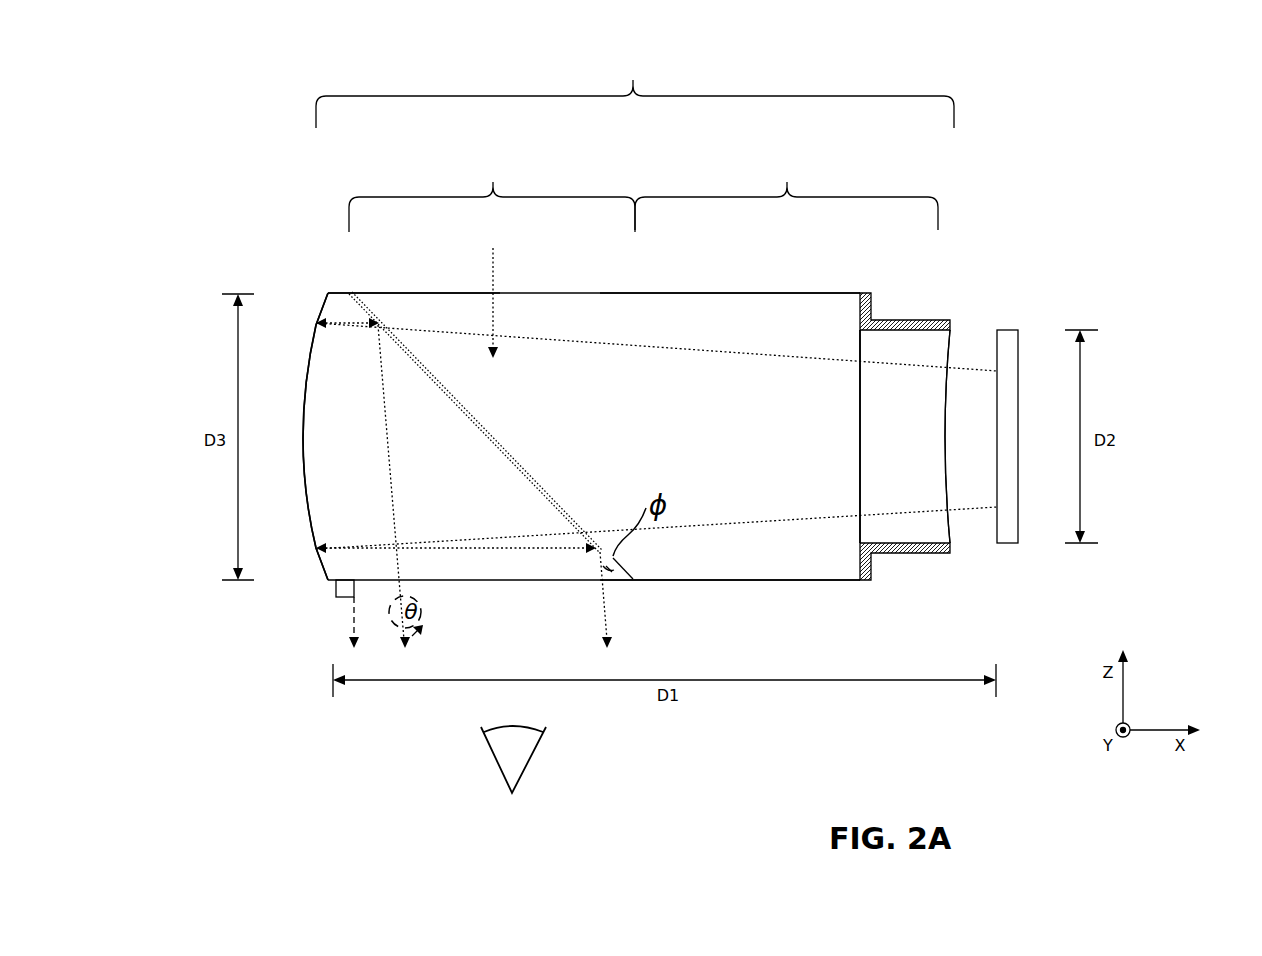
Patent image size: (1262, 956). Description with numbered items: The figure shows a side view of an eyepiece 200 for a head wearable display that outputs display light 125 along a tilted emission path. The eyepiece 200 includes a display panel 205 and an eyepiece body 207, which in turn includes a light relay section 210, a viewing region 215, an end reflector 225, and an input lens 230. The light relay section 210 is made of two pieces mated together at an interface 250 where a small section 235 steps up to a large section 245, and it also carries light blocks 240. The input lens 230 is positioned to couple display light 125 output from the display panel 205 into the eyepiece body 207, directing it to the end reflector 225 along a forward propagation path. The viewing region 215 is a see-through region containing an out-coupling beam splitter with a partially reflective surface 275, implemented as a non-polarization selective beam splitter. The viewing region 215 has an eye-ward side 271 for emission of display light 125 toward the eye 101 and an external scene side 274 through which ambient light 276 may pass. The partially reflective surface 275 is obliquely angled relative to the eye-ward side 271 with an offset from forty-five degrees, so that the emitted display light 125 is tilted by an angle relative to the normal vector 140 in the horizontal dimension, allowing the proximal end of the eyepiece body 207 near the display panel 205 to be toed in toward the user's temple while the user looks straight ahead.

The eyepiece 200 is at (1199, 110).
The eyepiece body 207 is at (635, 89).
The external scene side 274 is at (389, 273).
The viewing region 215 is at (492, 192).
The light relay section 210 is at (786, 191).
The large section 245 is at (748, 322).
The end reflector 225 is at (320, 570).
The light blocks 240 is at (871, 300).
The small section 235 is at (880, 444).
The input lens 230 is at (955, 543).
The interface 250 is at (860, 383).
The display panel 205 is at (1010, 328).
The display light 125 is at (750, 353).
The ambient light 276 is at (493, 285).
The partially reflective surface 275 is at (500, 437).
The normal vector 140 is at (350, 615).
The eye-ward side 271 is at (494, 628).
The eye 101 is at (500, 757).